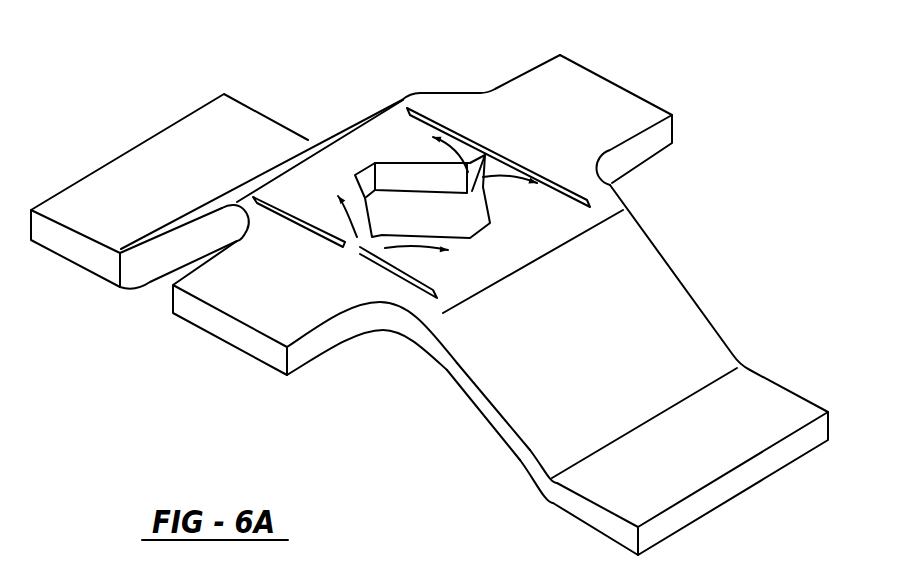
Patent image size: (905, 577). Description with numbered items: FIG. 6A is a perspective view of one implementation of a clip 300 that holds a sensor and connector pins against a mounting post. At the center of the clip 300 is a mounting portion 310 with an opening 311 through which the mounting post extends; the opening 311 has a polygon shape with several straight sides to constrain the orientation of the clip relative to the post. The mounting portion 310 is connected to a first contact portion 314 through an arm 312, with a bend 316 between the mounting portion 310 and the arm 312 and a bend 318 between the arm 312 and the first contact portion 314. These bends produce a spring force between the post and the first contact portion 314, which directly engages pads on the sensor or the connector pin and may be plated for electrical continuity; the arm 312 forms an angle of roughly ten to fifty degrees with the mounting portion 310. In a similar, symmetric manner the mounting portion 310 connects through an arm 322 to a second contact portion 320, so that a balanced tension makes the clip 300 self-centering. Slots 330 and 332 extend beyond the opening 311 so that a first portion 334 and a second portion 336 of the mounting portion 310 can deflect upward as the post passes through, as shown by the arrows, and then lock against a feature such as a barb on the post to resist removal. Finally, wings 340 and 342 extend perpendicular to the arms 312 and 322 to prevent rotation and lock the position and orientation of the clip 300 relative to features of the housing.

The clip 300 is at (757, 92).
The mounting portion 310 is at (397, 292).
The opening 311 is at (398, 178).
The arm 312 is at (655, 312).
The first contact portion 314 is at (705, 447).
The bend 316 is at (435, 308).
The bend 318 is at (577, 455).
The second contact portion 320 is at (165, 178).
The arm 322 is at (153, 257).
The slot 330 is at (473, 138).
The slot 332 is at (290, 212).
The first portion 334 is at (357, 217).
The second portion 336 is at (533, 220).
The wing 340 is at (217, 323).
The wing 342 is at (588, 92).